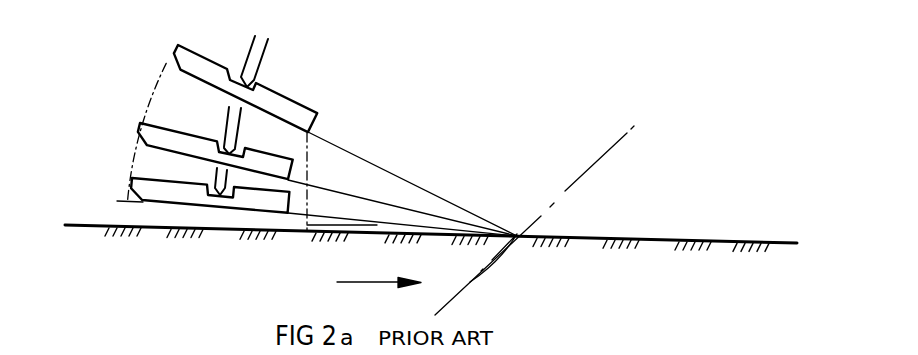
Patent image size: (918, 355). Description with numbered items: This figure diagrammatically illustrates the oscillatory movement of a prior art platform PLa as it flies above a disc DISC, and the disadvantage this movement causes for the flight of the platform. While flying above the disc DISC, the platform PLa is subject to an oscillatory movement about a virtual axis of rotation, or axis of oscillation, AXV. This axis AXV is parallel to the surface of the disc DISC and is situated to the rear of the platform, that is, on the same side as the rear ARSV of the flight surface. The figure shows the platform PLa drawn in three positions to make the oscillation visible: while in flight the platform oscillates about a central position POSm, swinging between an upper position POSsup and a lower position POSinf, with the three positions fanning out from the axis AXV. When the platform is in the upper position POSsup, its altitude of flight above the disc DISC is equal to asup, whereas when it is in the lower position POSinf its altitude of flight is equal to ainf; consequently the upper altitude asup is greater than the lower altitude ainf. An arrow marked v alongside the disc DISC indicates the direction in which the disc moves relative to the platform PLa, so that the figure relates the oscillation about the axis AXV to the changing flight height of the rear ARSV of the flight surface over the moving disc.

The disc DISC is at (582, 240).
The virtual axis of rotation AXV is at (520, 234).
The rear of the flight surface ARSV is at (310, 133).
The upper position POSsup is at (381, 168).
The central position POSm is at (441, 217).
The lower position POSinf is at (377, 225).
The upper altitude of flight asup is at (309, 132).
The lower altitude of flight ainf is at (289, 215).
The platform PLa is at (130, 192).
The disc velocity direction v is at (379, 274).